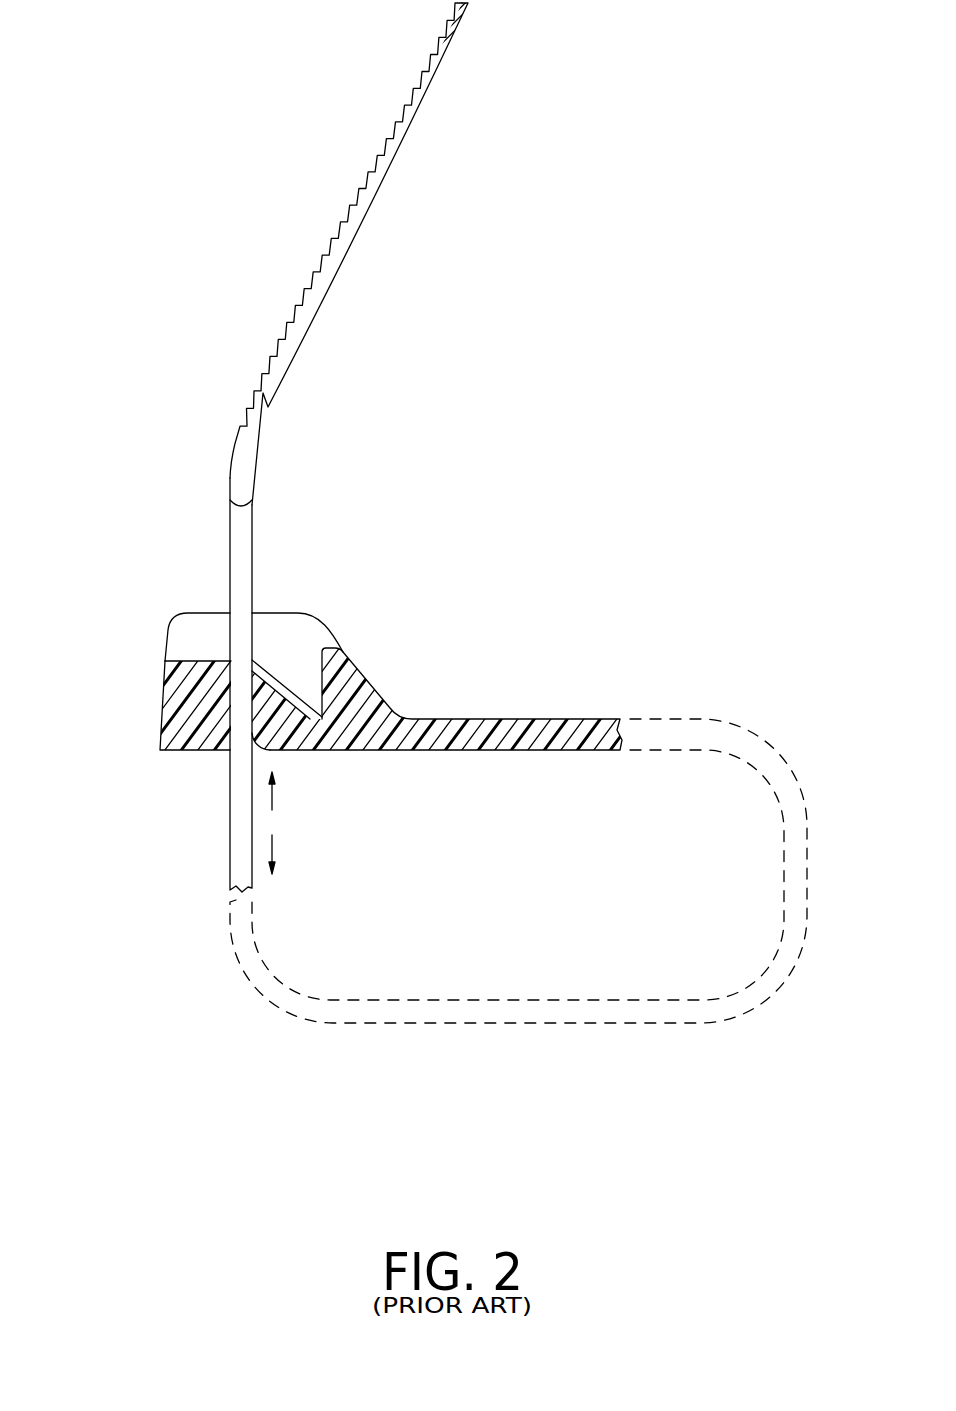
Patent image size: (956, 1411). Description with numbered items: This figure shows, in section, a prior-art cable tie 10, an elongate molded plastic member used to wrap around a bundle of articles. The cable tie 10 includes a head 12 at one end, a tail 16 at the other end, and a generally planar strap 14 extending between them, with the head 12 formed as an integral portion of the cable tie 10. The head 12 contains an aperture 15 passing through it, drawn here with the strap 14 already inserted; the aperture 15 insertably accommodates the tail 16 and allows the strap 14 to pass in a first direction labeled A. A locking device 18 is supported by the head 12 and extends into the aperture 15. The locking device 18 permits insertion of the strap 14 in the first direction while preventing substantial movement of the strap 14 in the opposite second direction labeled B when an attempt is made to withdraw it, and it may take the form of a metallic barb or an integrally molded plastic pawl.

The cable tie 10 is at (403, 511).
The head 12 is at (163, 697).
The strap 14 is at (537, 719).
The aperture 15 is at (246, 618).
The tail 16 is at (467, 10).
The locking device 18 is at (276, 680).